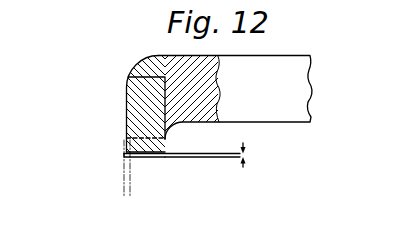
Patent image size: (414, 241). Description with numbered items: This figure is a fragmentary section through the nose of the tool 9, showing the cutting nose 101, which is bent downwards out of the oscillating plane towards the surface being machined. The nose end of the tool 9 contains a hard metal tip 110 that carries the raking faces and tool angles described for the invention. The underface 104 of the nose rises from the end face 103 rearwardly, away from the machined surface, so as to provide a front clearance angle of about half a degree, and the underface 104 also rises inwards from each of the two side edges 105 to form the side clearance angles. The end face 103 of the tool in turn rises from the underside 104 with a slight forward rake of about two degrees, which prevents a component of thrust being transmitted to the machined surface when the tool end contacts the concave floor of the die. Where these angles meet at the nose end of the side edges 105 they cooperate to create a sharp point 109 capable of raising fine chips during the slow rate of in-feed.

The tool 9 is at (298, 88).
The cutting nose 101 is at (119, 80).
The hard metal tip 110 is at (136, 100).
The end face 103 is at (119, 128).
The underface 104 is at (140, 162).
The side edges 105 is at (150, 156).
The sharp point 109 is at (124, 154).